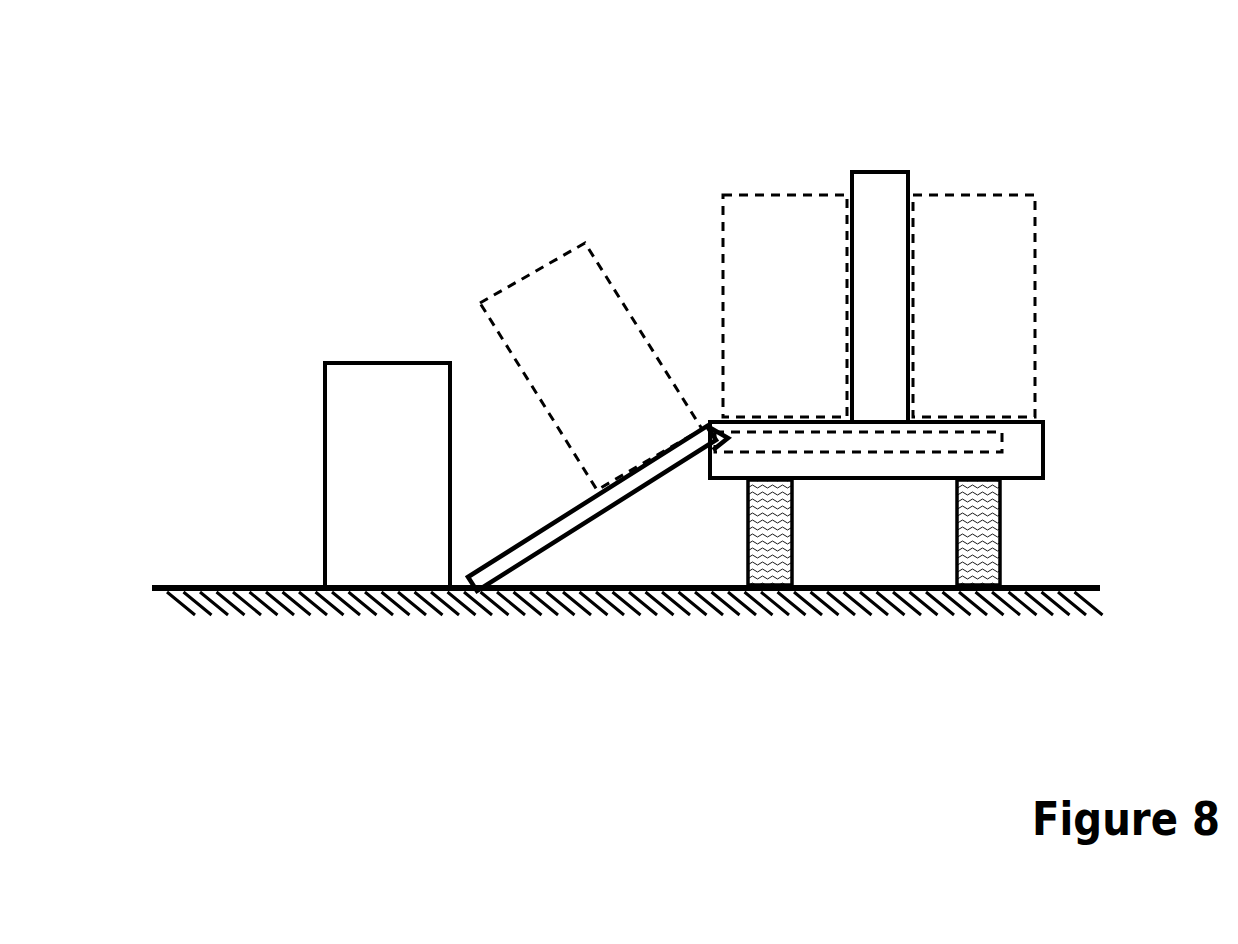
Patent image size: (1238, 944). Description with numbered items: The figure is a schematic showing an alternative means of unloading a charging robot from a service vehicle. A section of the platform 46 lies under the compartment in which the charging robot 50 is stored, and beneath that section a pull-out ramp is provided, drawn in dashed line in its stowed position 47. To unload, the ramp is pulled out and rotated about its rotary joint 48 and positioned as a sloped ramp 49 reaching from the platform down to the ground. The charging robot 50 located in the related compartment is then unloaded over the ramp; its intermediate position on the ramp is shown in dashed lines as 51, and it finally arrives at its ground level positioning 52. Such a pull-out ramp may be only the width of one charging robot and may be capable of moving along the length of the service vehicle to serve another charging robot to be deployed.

The platform 46 is at (1015, 450).
The pull-out ramp (stowed) 47 is at (880, 442).
The rotary joint 48 is at (708, 410).
The pull-out ramp (deployed) 49 is at (590, 541).
The charging robot 50 is at (772, 208).
The charging robot on ramp 51 is at (563, 293).
The ground level positioning 52 is at (363, 408).